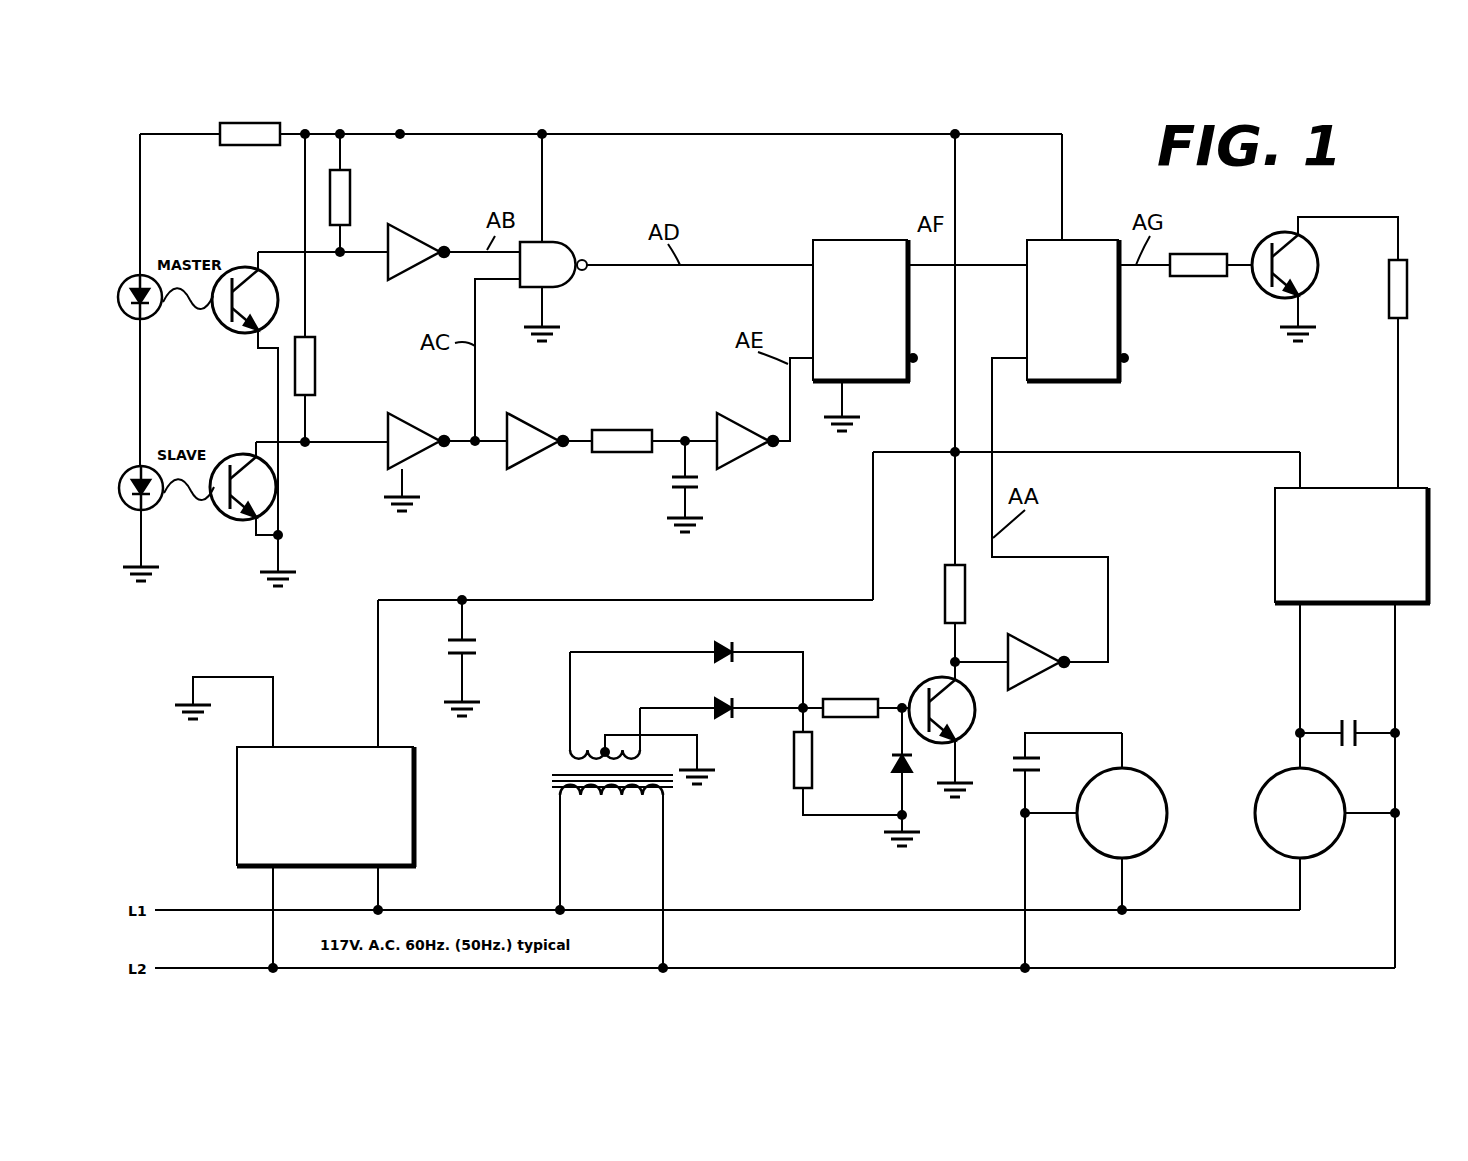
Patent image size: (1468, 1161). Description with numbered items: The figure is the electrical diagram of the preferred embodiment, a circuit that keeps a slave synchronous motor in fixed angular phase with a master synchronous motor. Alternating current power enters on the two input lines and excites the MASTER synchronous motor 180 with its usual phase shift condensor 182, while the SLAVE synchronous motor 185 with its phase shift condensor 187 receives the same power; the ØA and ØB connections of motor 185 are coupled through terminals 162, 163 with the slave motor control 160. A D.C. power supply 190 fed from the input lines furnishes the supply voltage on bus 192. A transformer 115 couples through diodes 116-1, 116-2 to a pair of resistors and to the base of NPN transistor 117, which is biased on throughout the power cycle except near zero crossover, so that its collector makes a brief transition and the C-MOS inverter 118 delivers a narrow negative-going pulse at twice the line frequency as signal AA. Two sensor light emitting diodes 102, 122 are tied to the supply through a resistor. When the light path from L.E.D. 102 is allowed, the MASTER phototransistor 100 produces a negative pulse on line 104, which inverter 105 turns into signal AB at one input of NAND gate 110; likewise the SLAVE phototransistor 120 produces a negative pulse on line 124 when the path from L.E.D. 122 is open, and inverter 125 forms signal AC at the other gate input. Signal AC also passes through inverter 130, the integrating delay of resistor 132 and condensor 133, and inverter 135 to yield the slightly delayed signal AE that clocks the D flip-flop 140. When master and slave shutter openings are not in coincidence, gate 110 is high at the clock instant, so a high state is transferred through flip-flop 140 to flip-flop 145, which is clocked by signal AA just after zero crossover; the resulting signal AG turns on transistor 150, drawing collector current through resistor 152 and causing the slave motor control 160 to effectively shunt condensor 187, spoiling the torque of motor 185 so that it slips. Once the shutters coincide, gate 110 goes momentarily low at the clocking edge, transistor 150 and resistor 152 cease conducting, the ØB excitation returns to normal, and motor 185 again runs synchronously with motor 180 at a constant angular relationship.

The MASTER phototransistor 100 is at (240, 272).
The sensor light emitting diode 102 is at (120, 298).
The line 104 is at (338, 258).
The inverter 105 is at (420, 258).
The NAND gate 110 is at (560, 262).
The transformer 115 is at (553, 779).
The diode 116-1 is at (735, 651).
The diode 116-2 is at (752, 694).
The NPN transistor 117 is at (970, 732).
The C-MOS inverter 118 is at (1025, 660).
The SLAVE phototransistor 120 is at (240, 460).
The sensor light emitting diode 122 is at (120, 485).
The line 124 is at (324, 438).
The inverter 125 is at (416, 438).
The inverter 130 is at (528, 438).
The resistor 132 is at (630, 436).
The condensor 133 is at (678, 484).
The inverter 135 is at (735, 438).
The "D" flip-flop 140 is at (866, 250).
The flip-flop 145 is at (1036, 248).
The transistor 150 is at (1280, 232).
The resistor 152 is at (1394, 300).
The slave motor control 160 is at (1288, 565).
The terminal 162 is at (1300, 625).
The terminal 163 is at (1394, 620).
The MASTER synchronous motor 180 is at (1155, 802).
The phase shift condensor 182 is at (1036, 768).
The SLAVE synchronous motor 185 is at (1272, 786).
The phase shift condensor 187 is at (1340, 727).
The D.C. power supply 190 is at (396, 818).
The +Vc supply line 192 is at (776, 134).